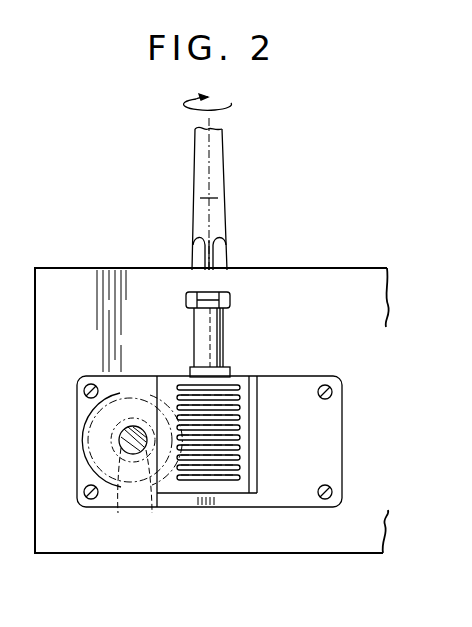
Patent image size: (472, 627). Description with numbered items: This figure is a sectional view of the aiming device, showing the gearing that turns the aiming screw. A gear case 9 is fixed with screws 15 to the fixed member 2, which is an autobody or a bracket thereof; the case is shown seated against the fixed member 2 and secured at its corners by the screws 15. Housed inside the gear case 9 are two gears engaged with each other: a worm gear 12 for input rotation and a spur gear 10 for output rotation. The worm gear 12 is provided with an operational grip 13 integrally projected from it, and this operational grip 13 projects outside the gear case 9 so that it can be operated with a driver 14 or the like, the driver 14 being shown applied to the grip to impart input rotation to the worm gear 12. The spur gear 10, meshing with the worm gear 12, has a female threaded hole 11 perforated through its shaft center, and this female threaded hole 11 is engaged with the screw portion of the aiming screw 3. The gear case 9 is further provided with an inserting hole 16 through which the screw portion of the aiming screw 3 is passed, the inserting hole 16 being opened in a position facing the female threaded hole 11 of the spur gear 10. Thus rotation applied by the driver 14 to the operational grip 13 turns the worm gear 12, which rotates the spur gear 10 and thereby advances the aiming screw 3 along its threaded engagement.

The fixed member 2 is at (313, 268).
The aiming screw 3 is at (129, 455).
The gear case 9 is at (282, 384).
The spur gear 10 is at (92, 452).
The female threaded hole 11 is at (148, 486).
The worm gear 12 is at (243, 442).
The operational grip 13 is at (231, 297).
The driver 14 is at (220, 186).
The screws 15 is at (322, 387).
The inserting hole 16 is at (122, 434).